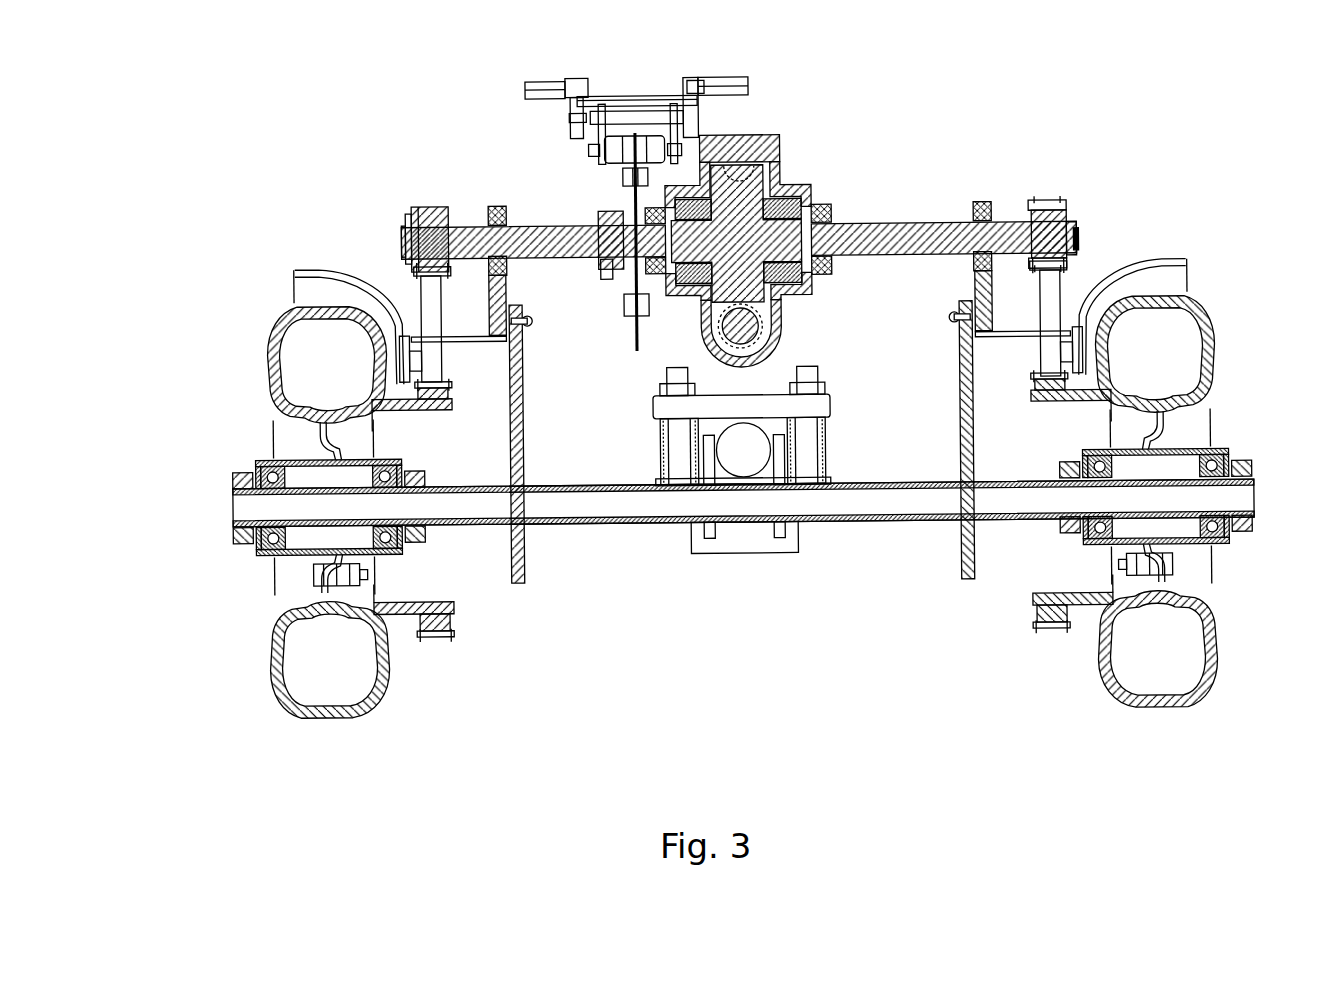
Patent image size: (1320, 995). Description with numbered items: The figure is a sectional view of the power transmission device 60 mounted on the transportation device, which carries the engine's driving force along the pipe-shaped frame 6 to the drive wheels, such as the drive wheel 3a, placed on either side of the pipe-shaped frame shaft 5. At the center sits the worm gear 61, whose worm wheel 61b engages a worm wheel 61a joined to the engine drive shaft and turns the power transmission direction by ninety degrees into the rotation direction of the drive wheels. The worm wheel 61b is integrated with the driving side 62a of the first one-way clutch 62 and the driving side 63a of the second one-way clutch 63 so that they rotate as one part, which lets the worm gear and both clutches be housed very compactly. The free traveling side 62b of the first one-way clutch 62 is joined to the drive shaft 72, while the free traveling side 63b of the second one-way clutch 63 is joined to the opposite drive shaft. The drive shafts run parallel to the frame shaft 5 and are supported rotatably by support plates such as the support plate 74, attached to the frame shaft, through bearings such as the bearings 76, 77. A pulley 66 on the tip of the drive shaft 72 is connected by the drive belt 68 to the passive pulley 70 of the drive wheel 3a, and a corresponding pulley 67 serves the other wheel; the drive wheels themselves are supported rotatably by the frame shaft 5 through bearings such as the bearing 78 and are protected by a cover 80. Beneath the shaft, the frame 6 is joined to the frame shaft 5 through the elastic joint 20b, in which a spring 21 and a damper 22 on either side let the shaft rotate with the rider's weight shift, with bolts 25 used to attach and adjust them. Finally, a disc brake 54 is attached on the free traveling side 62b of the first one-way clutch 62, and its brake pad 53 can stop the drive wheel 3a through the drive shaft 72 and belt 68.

The power transmission device 60 is at (335, 129).
The brake pad 53 is at (626, 93).
The driving side of first one-way clutch 62a is at (615, 170).
The free traveling side of first one-way clutch 62b is at (593, 190).
The drive shaft 72 is at (560, 224).
The worm gear 61 is at (806, 135).
The worm wheel 61b is at (778, 151).
The free traveling side of second one-way clutch 63b is at (824, 212).
The second one-way clutch 63 is at (782, 238).
The driving side of second one-way clutch 63a is at (766, 302).
The worm wheel 61a is at (786, 356).
The bearing 77 is at (1045, 213).
The pulley 67 is at (1076, 240).
The pulley 66 is at (420, 225).
The bearing 76 is at (495, 210).
The drive belt 68 is at (430, 310).
The cover 80 is at (298, 271).
The drive wheel 3a is at (276, 326).
The first one-way clutch 62 is at (640, 325).
The disc brake 54 is at (640, 340).
The bolt 25 is at (830, 405).
The joint 20b is at (836, 447).
The support plate 74 is at (322, 425).
The damper 22 is at (818, 448).
The spring 21 is at (800, 470).
The frame shaft 5 is at (640, 522).
The frame 6 is at (737, 462).
The bearing 78 is at (265, 541).
The passive pulley 70 is at (420, 632).